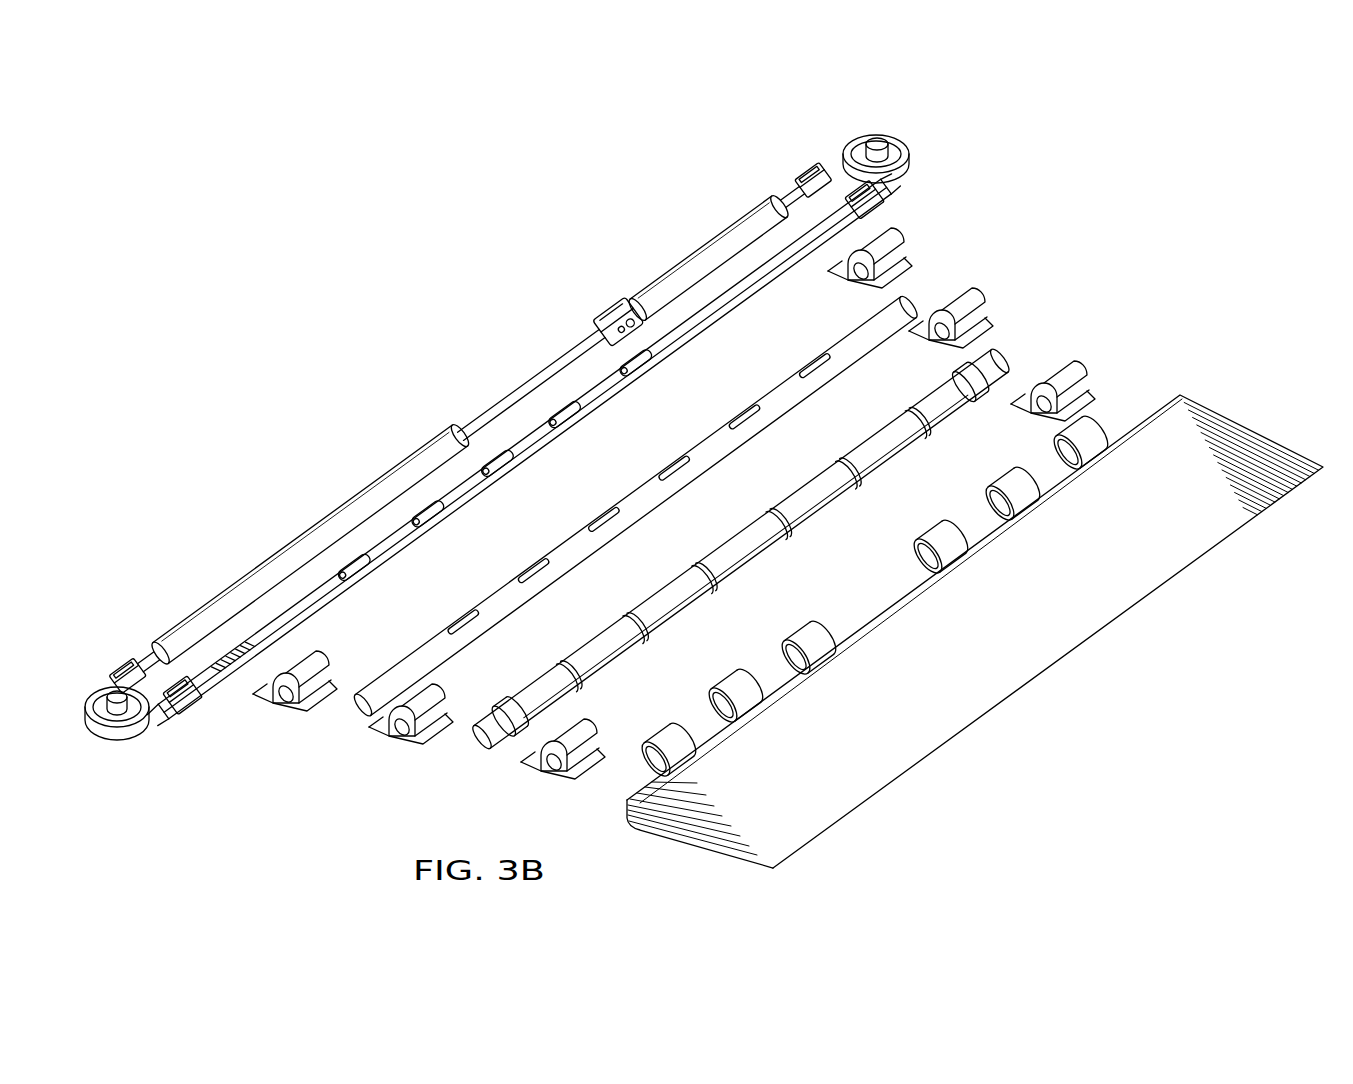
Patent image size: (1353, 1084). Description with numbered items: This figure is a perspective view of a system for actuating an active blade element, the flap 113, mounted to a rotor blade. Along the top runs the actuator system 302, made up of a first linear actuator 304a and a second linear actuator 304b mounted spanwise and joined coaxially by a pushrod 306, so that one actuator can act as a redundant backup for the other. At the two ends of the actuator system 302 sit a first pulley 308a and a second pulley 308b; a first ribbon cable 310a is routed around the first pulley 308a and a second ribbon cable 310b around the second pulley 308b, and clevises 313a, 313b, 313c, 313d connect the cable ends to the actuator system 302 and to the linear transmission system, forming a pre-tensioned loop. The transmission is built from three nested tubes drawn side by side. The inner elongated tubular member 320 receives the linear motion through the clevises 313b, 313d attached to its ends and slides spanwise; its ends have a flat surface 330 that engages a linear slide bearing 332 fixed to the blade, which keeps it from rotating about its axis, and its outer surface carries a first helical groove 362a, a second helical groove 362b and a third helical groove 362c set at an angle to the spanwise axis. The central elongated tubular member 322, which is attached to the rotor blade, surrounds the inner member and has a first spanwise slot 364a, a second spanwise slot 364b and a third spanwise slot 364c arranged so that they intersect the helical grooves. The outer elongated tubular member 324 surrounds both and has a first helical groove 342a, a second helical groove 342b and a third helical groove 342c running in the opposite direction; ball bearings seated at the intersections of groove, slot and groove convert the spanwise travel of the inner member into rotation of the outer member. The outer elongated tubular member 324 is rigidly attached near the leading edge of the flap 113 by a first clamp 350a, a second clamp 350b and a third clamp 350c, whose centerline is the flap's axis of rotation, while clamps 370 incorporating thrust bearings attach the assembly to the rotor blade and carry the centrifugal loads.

The actuator system 302 is at (154, 529).
The first linear actuator 304a is at (262, 578).
The second linear actuator 304b is at (714, 232).
The pushrod 306 is at (466, 420).
The first pulley 308a is at (103, 695).
The second pulley 308b is at (900, 134).
The first ribbon cable 310a is at (152, 736).
The second ribbon cable 310b is at (893, 188).
The clevis 313a is at (128, 664).
The clevis 313b is at (196, 710).
The clevis 313c is at (812, 168).
The clevis 313d is at (883, 203).
The inner elongated tubular member 320 is at (620, 394).
The central elongated tubular member 322 is at (773, 391).
The outer elongated tubular member 324 is at (807, 478).
The flat surface 330 is at (232, 690).
The linear slide bearing 332 is at (305, 712).
The first helical groove 342a is at (557, 670).
The second helical groove 342b is at (627, 626).
The third helical groove 342c is at (700, 566).
The first clamp 350a is at (650, 743).
The second clamp 350b is at (718, 694).
The third clamp 350c is at (786, 643).
The first helical groove 362a is at (365, 570).
The second helical groove 362b is at (440, 498).
The third helical groove 362c is at (510, 465).
The first spanwise slot 364a is at (458, 618).
The second spanwise slot 364b is at (530, 565).
The third spanwise slot 364c is at (603, 518).
The clamp 370 is at (582, 770).
The flap 113 is at (965, 698).